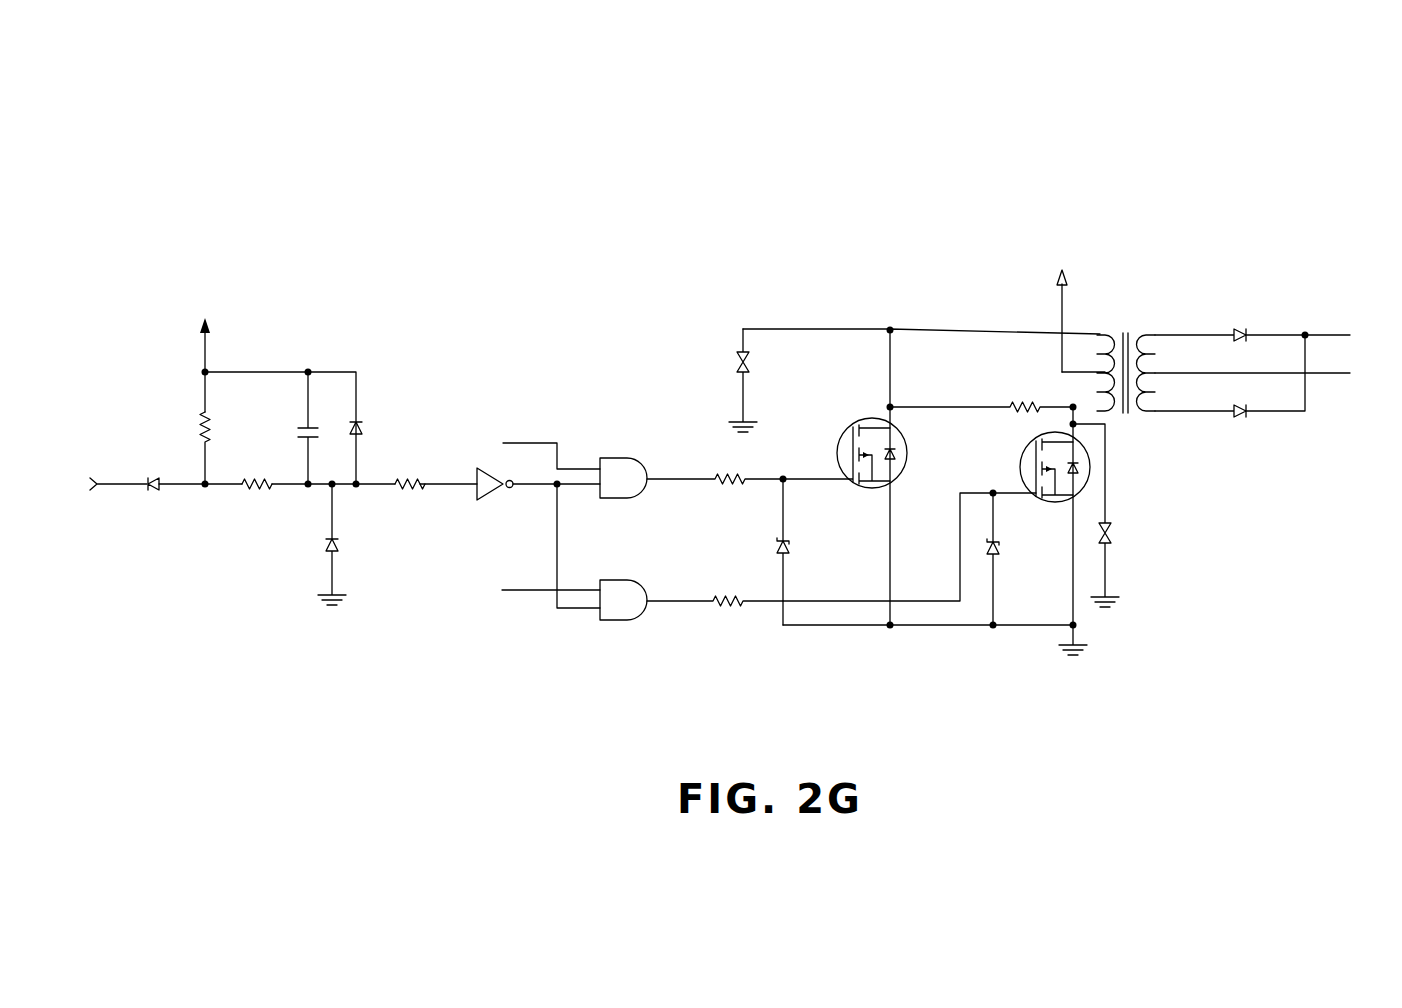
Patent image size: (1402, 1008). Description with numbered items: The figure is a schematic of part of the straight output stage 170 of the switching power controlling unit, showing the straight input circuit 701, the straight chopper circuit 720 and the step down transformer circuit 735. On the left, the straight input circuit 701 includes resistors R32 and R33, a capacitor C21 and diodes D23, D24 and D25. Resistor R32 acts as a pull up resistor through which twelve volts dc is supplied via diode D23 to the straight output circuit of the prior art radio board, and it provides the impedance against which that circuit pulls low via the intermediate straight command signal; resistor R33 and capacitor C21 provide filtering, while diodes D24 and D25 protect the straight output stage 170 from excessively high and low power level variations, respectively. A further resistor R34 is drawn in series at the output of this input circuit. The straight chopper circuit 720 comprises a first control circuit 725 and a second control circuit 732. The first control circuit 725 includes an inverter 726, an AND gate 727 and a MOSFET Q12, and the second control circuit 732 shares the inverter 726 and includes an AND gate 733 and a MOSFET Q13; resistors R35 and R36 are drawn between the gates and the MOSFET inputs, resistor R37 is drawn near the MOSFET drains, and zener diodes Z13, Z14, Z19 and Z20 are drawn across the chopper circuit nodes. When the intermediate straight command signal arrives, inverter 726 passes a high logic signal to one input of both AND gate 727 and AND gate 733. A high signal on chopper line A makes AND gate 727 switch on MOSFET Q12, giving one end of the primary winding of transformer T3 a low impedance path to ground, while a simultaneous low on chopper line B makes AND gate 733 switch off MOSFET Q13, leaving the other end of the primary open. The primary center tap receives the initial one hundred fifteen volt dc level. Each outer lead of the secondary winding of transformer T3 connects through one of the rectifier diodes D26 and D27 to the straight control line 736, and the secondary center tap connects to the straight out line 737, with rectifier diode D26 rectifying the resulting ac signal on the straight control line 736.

The straight output stage 170 is at (1033, 177).
The straight input circuit 701 is at (375, 366).
The straight chopper circuit 720 is at (842, 312).
The first control circuit 725 is at (579, 488).
The inverter 726 is at (492, 491).
The AND gate 727 is at (622, 499).
The second control circuit 732 is at (753, 622).
The AND gate 733 is at (622, 620).
The step down transformer circuit 735 is at (1216, 343).
The straight control line 736 is at (1338, 333).
The straight out line 737 is at (1333, 378).
The resistor R32 is at (201, 425).
The resistor R33 is at (258, 490).
The resistor R34 is at (406, 490).
The resistor R35 is at (728, 474).
The resistor R36 is at (738, 586).
The resistor R37 is at (1018, 400).
The capacitor C21 is at (300, 432).
The diode D23 is at (153, 492).
The diode D24 is at (362, 428).
The diode D25 is at (326, 549).
The rectifier diode D26 is at (1238, 328).
The rectifier diode D27 is at (1238, 418).
The zener diode Z13 is at (788, 551).
The zener diode Z14 is at (996, 552).
The zener diode Z19 is at (738, 367).
The zener diode Z20 is at (1108, 545).
The MOSFET Q12 is at (848, 427).
The MOSFET Q13 is at (1025, 451).
The transformer T3 is at (1125, 415).